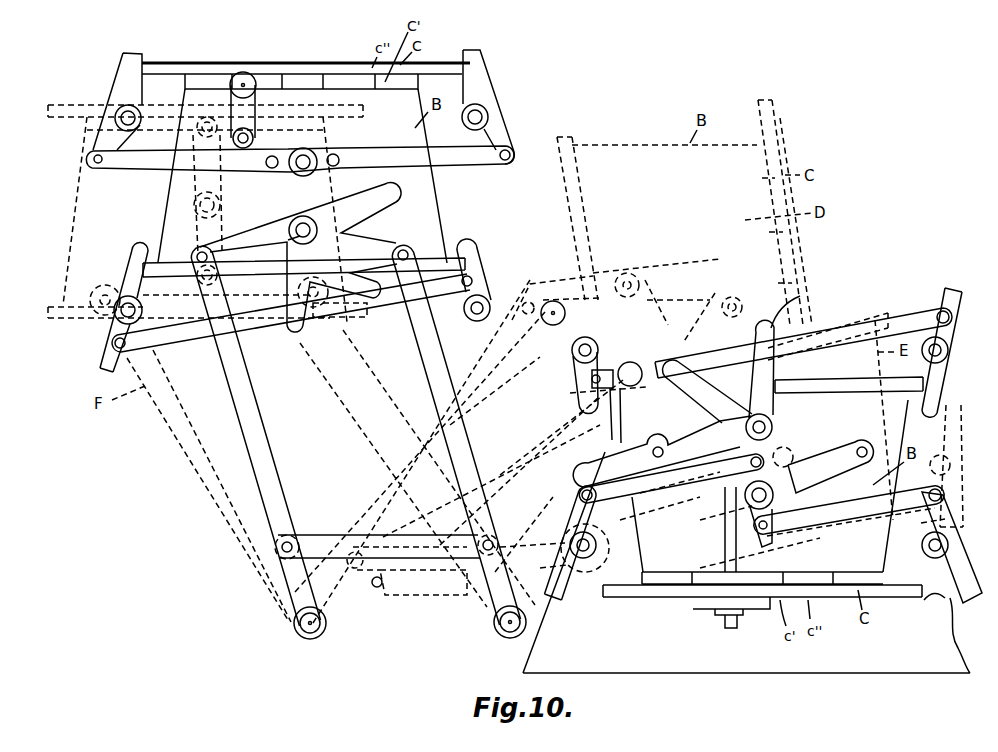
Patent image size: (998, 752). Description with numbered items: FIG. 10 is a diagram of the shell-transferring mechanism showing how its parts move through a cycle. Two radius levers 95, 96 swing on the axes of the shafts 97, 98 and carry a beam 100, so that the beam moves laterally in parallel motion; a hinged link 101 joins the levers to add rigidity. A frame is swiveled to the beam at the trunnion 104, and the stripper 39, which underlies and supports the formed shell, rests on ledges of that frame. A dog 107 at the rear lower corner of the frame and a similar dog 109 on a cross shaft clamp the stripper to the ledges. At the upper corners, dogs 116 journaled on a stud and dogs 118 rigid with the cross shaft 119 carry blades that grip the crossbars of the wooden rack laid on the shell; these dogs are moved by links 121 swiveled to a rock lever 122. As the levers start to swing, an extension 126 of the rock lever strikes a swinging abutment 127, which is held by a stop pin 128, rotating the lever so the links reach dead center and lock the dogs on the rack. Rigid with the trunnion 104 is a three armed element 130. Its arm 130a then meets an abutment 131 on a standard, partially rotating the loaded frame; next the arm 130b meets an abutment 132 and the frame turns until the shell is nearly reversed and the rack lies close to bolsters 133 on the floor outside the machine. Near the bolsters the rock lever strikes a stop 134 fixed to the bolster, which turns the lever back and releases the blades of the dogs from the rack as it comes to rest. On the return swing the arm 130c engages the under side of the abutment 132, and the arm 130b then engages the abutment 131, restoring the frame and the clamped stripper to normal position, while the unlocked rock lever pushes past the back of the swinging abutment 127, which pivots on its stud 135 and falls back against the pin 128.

The stripper 39 is at (446, 266).
The lever 95 is at (282, 498).
The lever 96 is at (471, 461).
The shaft 97 is at (322, 630).
The pivot pin 98 is at (504, 633).
The beam 100 is at (363, 236).
The hinged link 101 is at (344, 542).
The trunnion 104 is at (310, 218).
The dog 107 is at (141, 262).
The dog 109 is at (476, 259).
The dog 116 is at (127, 77).
The dog 118 is at (478, 72).
The cross shaft 119 is at (957, 572).
The link 121 is at (397, 161).
The rock lever 122 is at (327, 151).
The extension 126 is at (822, 549).
The swinging abutment 127 is at (255, 139).
The stop pin 128 is at (259, 102).
The three armed element 130 is at (298, 242).
The arm 130a is at (294, 330).
The arm 130b is at (612, 352).
The arm 130c is at (665, 322).
The abutment 131 is at (553, 325).
The abutment 132 is at (610, 393).
The bolster 133 is at (725, 662).
The stop 134 is at (724, 540).
The stud 135 is at (248, 74).